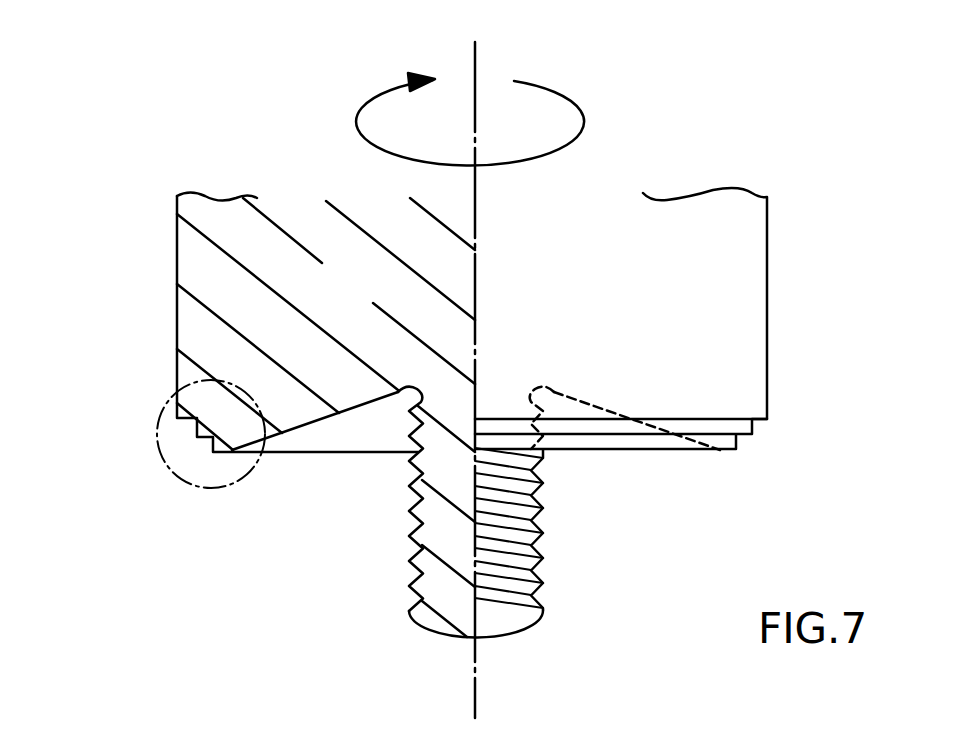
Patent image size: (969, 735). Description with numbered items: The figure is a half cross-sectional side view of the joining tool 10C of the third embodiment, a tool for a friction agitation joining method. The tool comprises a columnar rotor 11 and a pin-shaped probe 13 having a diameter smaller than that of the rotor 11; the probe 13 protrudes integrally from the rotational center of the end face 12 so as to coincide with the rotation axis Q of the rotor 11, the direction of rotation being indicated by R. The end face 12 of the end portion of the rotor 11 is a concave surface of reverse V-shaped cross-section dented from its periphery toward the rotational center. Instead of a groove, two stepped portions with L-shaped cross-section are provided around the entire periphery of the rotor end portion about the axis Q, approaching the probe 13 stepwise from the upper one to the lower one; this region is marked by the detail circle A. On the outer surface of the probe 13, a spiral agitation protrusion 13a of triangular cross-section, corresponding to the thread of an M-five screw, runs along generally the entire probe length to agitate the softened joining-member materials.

The joining tool 10C is at (414, 295).
The rotor 11 is at (233, 285).
The end face 12 is at (357, 400).
The probe 13 is at (427, 543).
The spiral agitation protrusion 13a is at (413, 500).
The detail region A is at (157, 433).
The rotation direction R is at (364, 111).
The rotation axis Q is at (478, 80).